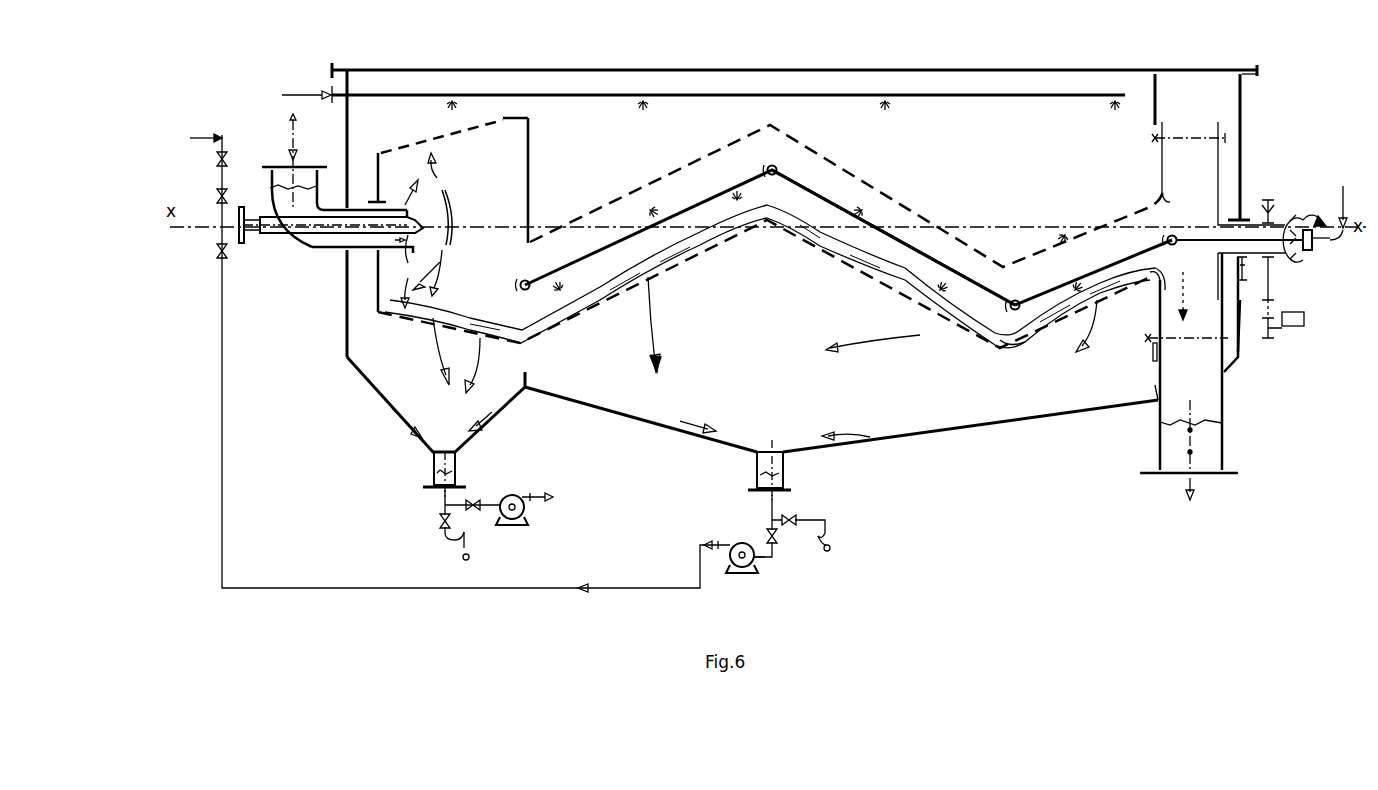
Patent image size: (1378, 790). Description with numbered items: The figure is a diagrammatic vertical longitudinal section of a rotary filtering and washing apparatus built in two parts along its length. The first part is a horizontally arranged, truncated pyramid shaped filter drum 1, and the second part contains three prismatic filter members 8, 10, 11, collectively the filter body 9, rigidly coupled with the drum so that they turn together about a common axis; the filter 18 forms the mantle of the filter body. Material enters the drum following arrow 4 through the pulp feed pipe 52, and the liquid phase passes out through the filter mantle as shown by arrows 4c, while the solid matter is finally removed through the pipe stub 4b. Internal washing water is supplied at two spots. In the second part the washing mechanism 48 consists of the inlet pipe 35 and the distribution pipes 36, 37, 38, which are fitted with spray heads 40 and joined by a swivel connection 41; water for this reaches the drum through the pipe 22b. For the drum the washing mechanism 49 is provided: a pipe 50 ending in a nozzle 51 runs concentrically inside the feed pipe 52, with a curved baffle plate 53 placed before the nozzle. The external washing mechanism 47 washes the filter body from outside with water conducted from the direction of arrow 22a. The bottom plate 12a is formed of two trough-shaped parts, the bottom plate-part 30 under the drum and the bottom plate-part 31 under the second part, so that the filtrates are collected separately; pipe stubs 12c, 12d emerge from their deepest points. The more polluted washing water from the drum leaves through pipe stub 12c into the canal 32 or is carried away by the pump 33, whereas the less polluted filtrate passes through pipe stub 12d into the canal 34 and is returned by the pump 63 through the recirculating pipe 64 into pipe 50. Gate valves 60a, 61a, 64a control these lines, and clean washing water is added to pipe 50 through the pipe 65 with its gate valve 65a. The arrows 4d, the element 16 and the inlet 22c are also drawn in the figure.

The filter drum 1 is at (500, 132).
The arrow 4 is at (292, 128).
The pipe stub 4b is at (1193, 493).
The arrows 4c is at (652, 340).
The material flow 4d is at (436, 342).
The prismatic filter member 8 is at (723, 158).
The filter body 9 is at (828, 158).
The prismatic filter member 10 is at (897, 230).
The prismatic filter member 11 is at (1082, 252).
The bottom plate 12a is at (608, 416).
The pipe stub 12c is at (433, 463).
The pipe stub 12d is at (775, 463).
The outlet column 16 is at (1155, 360).
The filter 18 is at (1238, 373).
The arrow 22a is at (292, 80).
The pipe 22b is at (1344, 199).
The liquid inlet 22c is at (222, 134).
The bottom plate-part 30 is at (380, 372).
The bottom plate-part 31 is at (968, 405).
The canal 32 is at (460, 547).
The pump 33 is at (520, 520).
The canal 34 is at (830, 549).
The inlet pipe 35 is at (1208, 240).
The distribution pipe 36 is at (1108, 267).
The distribution pipe 37 is at (900, 253).
The distribution pipe 38 is at (594, 258).
The spray heads 40 is at (967, 283).
The swivel connection 41 is at (1010, 332).
The external washing mechanism 47 is at (799, 92).
The washing mechanism 48 is at (908, 228).
The washing mechanism 49 is at (308, 246).
The pipe 50 is at (250, 229).
The nozzle 51 is at (403, 222).
The pipe 52 is at (320, 253).
The curved baffle plate 53 is at (448, 222).
The gate valve 60a is at (217, 252).
The gate valve 61a is at (775, 545).
The pump 63 is at (740, 544).
The recirculating pipe 64 is at (318, 589).
The gate valve 64a is at (792, 516).
The pipe 65 is at (217, 158).
The gate valve 65a is at (217, 196).